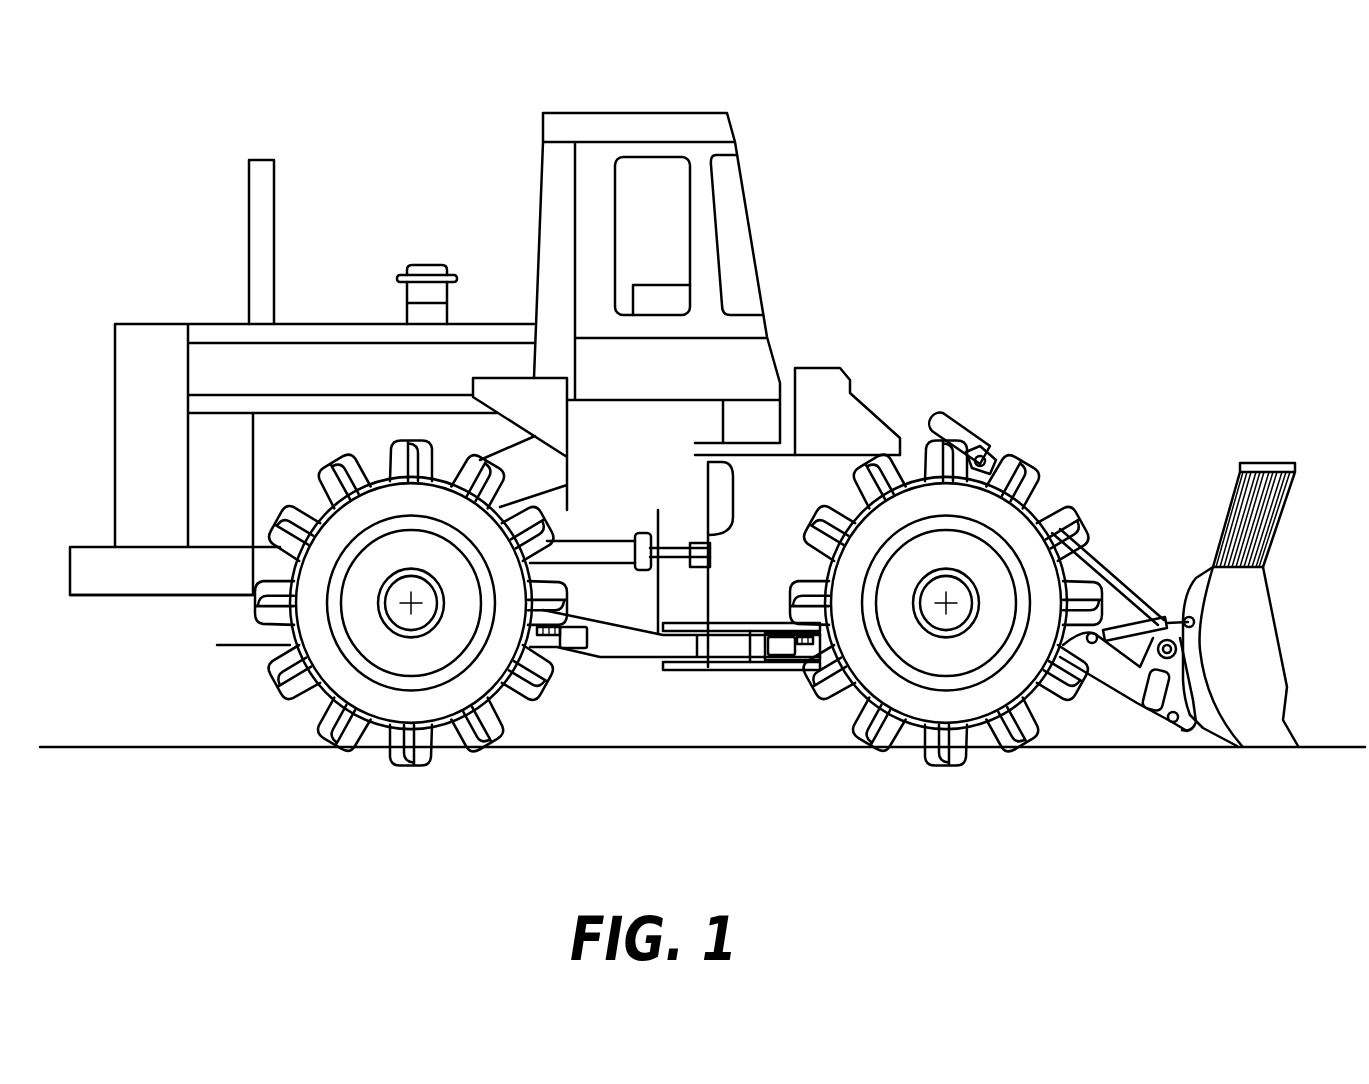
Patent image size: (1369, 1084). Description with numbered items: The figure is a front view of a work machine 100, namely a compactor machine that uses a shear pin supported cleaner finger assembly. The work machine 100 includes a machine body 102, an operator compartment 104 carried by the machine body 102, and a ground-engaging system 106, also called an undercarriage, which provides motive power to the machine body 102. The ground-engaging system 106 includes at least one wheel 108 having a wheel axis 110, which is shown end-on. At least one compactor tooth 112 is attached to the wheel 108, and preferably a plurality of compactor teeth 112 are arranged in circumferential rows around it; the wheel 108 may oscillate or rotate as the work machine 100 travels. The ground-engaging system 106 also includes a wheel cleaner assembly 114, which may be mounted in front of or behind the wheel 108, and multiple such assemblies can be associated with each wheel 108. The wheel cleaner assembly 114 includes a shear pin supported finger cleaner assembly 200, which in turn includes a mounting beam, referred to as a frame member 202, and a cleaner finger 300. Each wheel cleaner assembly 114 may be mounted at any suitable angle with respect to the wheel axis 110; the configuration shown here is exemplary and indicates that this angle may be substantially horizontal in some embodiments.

The work machine 100 is at (880, 94).
The machine body 102 is at (125, 594).
The operator compartment 104 is at (637, 112).
The ground-engaging system 106 is at (631, 624).
The wheel 108 is at (385, 710).
The wheel axis 110 is at (411, 603).
The compactor tooth 112 is at (527, 690).
The wheel cleaner assembly 114 is at (575, 650).
The shear pin supported finger cleaner assembly 200 is at (595, 637).
The frame member 202 is at (725, 640).
The cleaner finger 300 is at (545, 626).